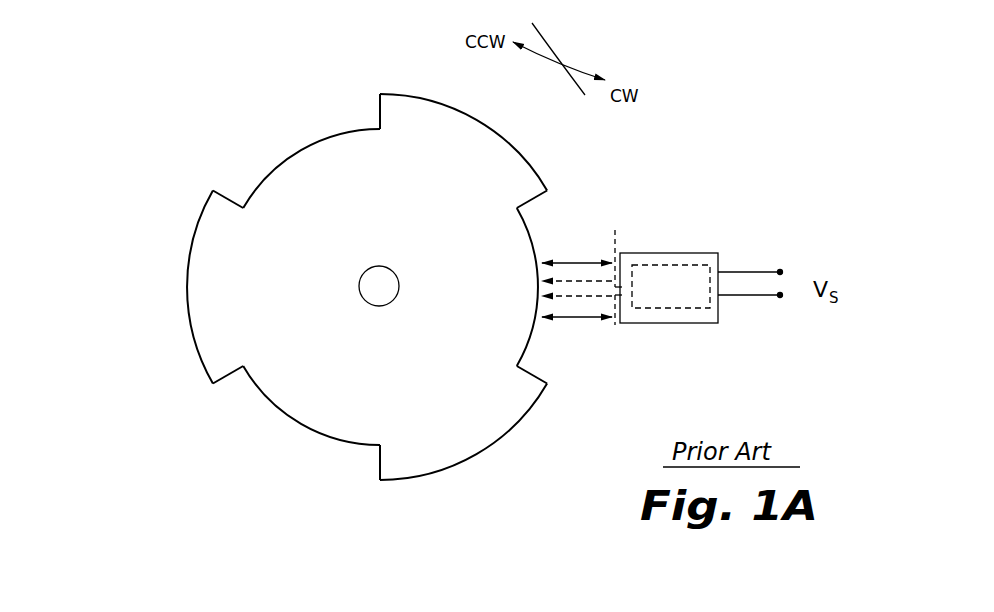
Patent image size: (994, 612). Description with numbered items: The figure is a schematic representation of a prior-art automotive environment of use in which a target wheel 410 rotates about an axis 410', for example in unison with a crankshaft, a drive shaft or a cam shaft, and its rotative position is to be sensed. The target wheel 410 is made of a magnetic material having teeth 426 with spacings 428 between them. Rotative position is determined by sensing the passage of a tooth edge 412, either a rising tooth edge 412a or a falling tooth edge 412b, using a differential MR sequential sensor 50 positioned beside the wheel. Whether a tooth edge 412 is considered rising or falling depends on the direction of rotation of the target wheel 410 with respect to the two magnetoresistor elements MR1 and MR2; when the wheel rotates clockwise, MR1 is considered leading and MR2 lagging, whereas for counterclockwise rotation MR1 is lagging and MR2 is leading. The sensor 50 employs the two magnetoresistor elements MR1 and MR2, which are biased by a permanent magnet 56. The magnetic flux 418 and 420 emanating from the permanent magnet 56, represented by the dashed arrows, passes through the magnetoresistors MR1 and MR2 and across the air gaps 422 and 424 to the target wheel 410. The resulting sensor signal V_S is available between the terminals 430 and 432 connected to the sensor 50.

The target wheel 410 is at (362, 295).
The axis 410' is at (355, 327).
The tooth edge 412 is at (371, 295).
The rising tooth edge 412a is at (228, 192).
The falling tooth edge 412b is at (372, 113).
The magnetic flux 418 is at (566, 276).
The magnetic flux 420 is at (566, 299).
The air gap 422 is at (565, 262).
The air gap 424 is at (566, 325).
The teeth 426 is at (193, 218).
The spacings 428 is at (303, 143).
The terminal 430 is at (780, 270).
The terminal 432 is at (780, 297).
The differential MR sequential sensor 50 is at (720, 258).
The permanent magnet 56 is at (702, 312).
The magnetoresistor element MR1 is at (612, 240).
The magnetoresistor element MR2 is at (612, 322).